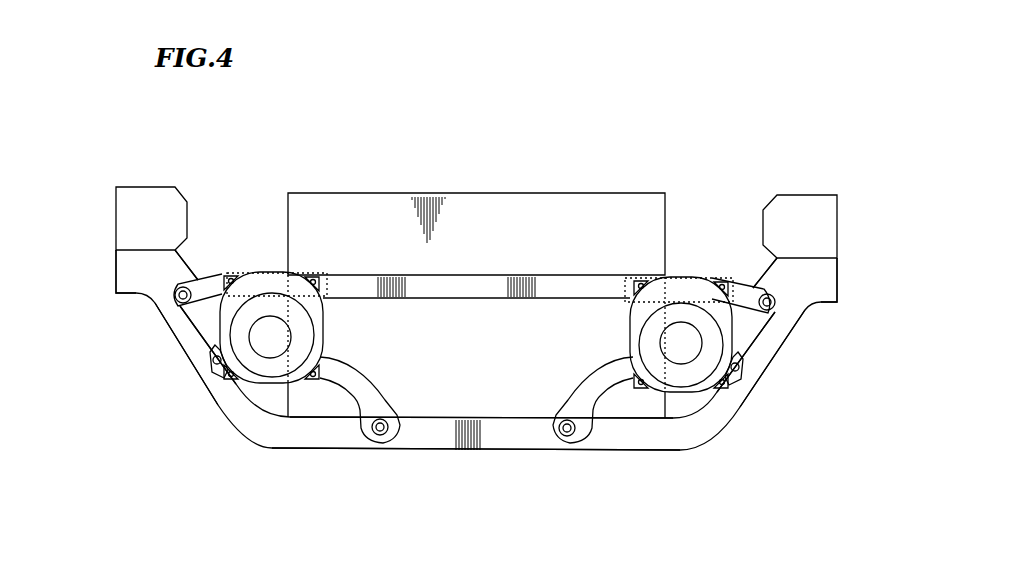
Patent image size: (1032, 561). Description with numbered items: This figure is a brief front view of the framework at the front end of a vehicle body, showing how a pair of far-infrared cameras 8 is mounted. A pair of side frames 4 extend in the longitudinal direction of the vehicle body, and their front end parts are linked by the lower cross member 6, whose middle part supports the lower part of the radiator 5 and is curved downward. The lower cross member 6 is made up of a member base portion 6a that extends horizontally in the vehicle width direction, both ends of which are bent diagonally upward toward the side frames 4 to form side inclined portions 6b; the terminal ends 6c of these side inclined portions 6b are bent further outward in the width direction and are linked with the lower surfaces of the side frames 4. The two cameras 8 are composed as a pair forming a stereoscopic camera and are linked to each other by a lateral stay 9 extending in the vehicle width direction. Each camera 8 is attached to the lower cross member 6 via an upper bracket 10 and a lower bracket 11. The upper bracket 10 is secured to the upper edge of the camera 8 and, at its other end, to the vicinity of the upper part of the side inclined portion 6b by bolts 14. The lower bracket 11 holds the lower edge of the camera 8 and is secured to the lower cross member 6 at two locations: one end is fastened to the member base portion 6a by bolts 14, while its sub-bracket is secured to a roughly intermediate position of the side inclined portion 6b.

The side frame 4 is at (122, 218).
The radiator 5 is at (452, 193).
The lower cross member 6 is at (600, 453).
The member base portion 6a is at (497, 450).
The side inclined portion 6b is at (233, 413).
The terminal end 6c is at (128, 269).
The far-infrared camera 8 is at (258, 332).
The lateral stay 9 is at (570, 282).
The upper bracket 10 is at (213, 280).
The lower bracket 11 is at (333, 383).
The bolt 14 is at (182, 302).